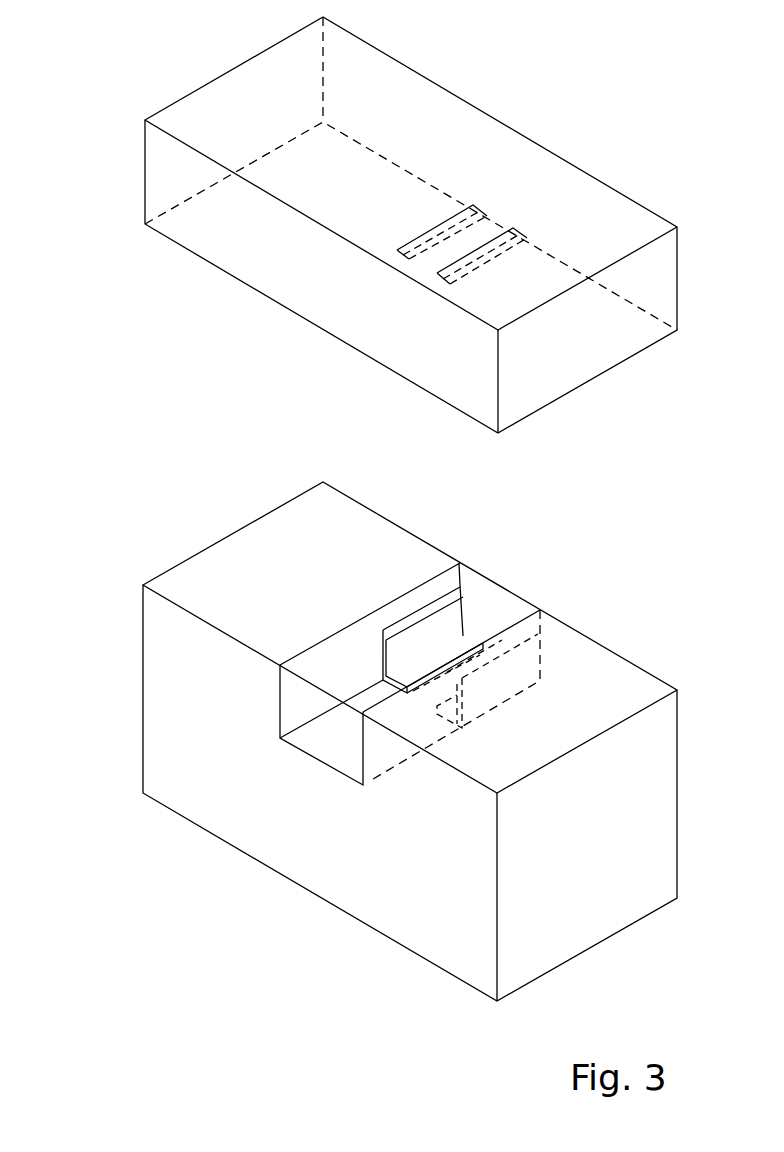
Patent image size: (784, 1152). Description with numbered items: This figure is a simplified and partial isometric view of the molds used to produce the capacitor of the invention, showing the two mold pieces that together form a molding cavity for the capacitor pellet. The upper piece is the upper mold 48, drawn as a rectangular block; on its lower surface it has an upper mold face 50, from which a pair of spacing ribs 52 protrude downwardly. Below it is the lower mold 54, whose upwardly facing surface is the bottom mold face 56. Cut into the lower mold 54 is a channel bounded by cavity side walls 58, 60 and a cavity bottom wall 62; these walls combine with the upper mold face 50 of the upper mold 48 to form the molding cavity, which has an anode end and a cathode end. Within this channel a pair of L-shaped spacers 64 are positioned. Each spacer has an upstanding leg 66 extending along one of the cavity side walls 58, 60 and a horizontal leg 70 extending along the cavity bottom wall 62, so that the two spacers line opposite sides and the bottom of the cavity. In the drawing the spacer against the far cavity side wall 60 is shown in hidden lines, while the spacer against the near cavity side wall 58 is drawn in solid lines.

The upper mold 48 is at (382, 226).
The upper mold face 50 is at (602, 383).
The spacing ribs 52 is at (483, 208).
The lower mold 54 is at (362, 738).
The bottom mold face 56 is at (421, 648).
The cavity side wall 58 is at (482, 606).
The cavity side wall 60 is at (358, 772).
The cavity bottom wall 62 is at (342, 725).
The L-shaped spacers 64 is at (468, 587).
The upstanding legs 66 is at (447, 620).
The horizontal legs 70 is at (452, 647).